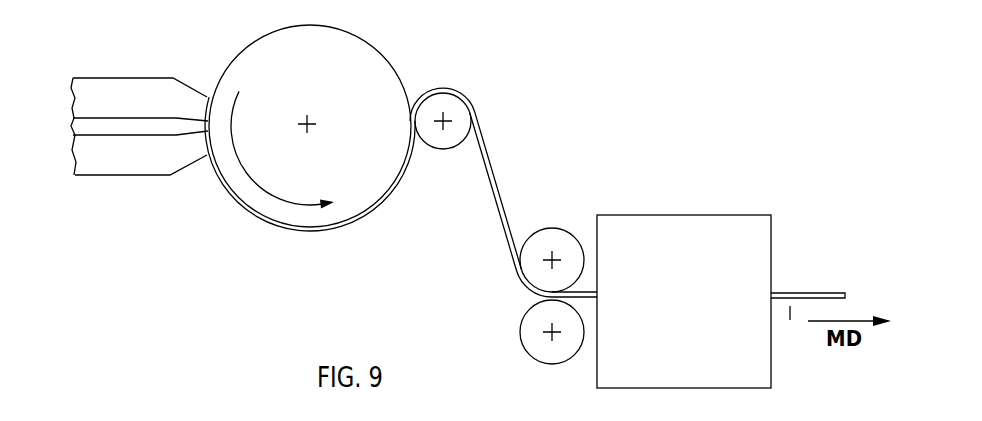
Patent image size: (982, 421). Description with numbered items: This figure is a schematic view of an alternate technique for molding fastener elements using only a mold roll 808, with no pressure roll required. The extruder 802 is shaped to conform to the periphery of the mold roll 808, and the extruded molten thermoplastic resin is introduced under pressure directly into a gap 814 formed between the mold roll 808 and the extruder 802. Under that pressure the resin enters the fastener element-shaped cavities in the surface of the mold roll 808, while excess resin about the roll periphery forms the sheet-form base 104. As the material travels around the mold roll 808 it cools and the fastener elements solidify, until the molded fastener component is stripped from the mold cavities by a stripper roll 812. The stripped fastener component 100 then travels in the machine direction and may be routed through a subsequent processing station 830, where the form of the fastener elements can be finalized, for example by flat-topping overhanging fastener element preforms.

The extruder 802 is at (107, 78).
The mold roll 808 is at (323, 82).
The gap 814 is at (206, 68).
The stripper roll 812 is at (436, 149).
The subsequent processing station 830 is at (670, 214).
The laminate web 100 is at (791, 270).
The sheet-form base 104 is at (790, 325).